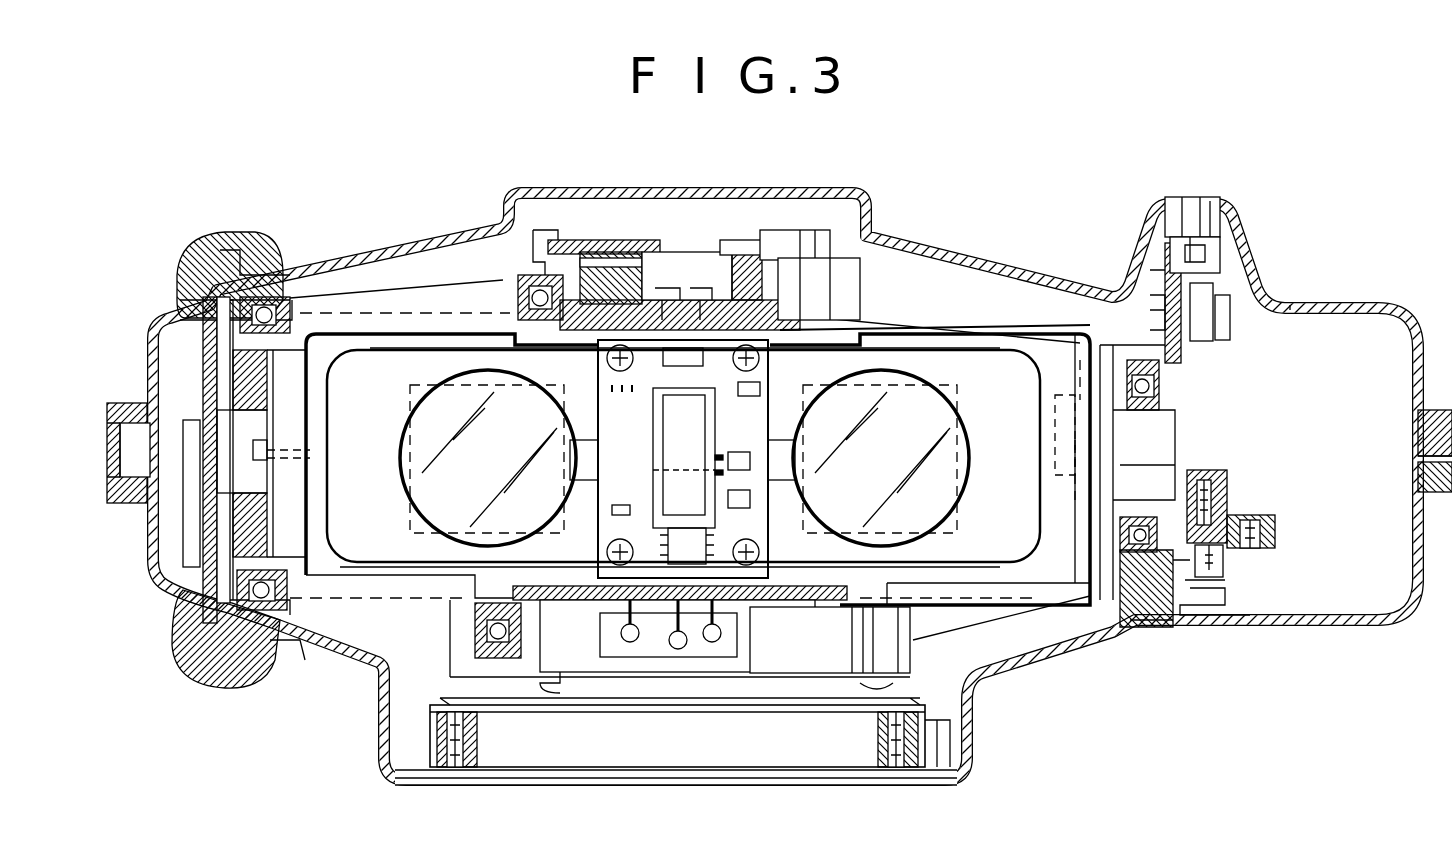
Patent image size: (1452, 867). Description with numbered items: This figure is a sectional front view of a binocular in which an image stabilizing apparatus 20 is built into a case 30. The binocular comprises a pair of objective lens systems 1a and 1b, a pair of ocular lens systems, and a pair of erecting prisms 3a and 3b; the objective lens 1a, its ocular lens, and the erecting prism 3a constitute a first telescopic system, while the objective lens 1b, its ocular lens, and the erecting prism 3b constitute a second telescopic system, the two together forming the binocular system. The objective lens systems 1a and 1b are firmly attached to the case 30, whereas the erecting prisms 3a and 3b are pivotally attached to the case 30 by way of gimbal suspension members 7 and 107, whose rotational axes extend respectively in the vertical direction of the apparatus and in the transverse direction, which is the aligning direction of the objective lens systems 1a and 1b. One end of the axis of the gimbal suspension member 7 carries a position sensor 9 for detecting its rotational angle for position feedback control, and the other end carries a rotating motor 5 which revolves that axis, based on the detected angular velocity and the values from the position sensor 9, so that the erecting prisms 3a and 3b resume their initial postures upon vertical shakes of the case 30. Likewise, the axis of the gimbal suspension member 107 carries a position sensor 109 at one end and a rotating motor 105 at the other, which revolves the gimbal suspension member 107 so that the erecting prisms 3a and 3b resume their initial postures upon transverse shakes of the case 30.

The image stabilizing apparatus 20 is at (612, 222).
The rotating motor 105 is at (682, 245).
The erecting prism 3a is at (407, 347).
The erecting prism 3b is at (955, 390).
The gimbal suspension member 7 is at (920, 335).
The gimbal suspension member 107 is at (1020, 337).
The case 30 is at (1325, 292).
The rotating motor 5 is at (190, 490).
The objective lens system 1a is at (405, 470).
The objective lens system 1b is at (965, 478).
The position sensor 9 is at (1240, 578).
The position sensor 109 is at (640, 645).